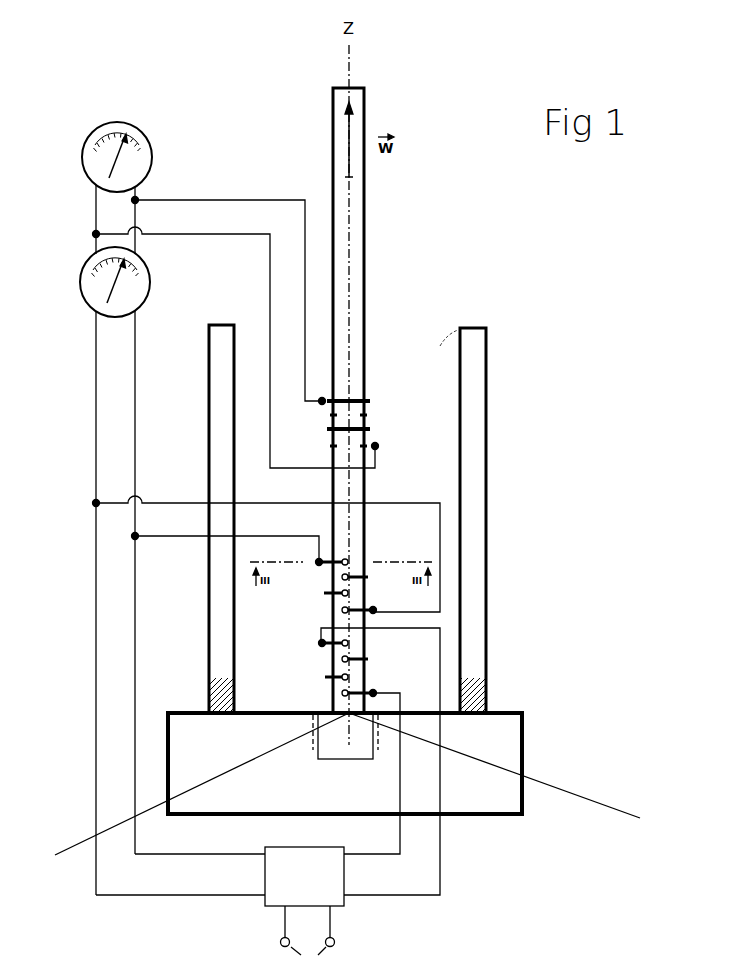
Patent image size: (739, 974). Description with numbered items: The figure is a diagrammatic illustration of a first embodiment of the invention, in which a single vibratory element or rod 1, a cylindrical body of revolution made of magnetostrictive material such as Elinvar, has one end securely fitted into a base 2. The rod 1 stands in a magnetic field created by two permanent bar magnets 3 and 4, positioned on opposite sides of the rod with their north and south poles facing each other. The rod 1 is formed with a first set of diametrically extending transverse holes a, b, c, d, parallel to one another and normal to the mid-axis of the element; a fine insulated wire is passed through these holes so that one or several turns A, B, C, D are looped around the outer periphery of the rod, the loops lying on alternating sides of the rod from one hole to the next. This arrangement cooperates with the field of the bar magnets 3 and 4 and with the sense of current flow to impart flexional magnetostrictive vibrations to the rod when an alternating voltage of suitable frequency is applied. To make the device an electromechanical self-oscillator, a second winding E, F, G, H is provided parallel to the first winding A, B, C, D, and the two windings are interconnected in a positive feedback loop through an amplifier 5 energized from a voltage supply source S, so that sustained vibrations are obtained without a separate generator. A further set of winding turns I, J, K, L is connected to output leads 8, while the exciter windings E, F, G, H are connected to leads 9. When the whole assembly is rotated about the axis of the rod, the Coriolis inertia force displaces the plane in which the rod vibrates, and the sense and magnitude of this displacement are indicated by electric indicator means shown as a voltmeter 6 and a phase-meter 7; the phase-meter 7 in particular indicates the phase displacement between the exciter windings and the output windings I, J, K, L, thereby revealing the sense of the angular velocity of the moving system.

The vibratory element or rod 1 is at (352, 250).
The base 2 is at (505, 800).
The permanent bar magnet 3 is at (226, 487).
The permanent bar magnet 4 is at (468, 481).
The amplifier 5 is at (304, 907).
The voltmeter 6 is at (143, 150).
The phase-meter 7 is at (145, 285).
The output leads 8 is at (305, 290).
The leads 9 is at (176, 535).
The winding turn L is at (372, 398).
The winding turn K is at (372, 413).
The winding turn J is at (372, 428).
The winding turn I is at (382, 446).
The winding turn H is at (316, 561).
The winding turn G is at (372, 577).
The winding turn F is at (321, 592).
The winding turn E is at (376, 607).
The winding turn D is at (318, 641).
The winding turn C is at (372, 657).
The winding turn B is at (322, 676).
The winding turn A is at (378, 690).
The transverse hole a is at (340, 693).
The transverse hole b is at (352, 677).
The transverse hole c is at (340, 659).
The transverse hole d is at (350, 641).
The voltage supply source S is at (308, 957).